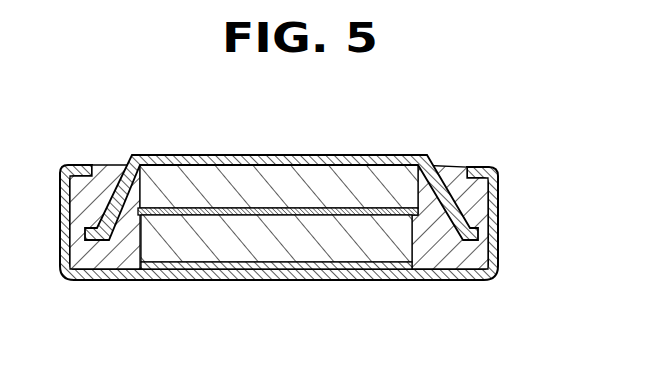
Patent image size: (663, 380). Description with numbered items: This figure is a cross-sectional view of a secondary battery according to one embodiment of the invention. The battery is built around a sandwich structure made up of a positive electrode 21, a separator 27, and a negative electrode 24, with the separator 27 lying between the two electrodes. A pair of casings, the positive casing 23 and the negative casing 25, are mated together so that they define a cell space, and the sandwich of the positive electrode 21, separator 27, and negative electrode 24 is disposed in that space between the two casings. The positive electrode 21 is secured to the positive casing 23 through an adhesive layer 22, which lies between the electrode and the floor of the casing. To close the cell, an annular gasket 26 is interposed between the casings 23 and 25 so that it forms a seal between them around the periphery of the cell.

The positive electrode 21 is at (188, 243).
The adhesive layer 22 is at (240, 266).
The positive casing 23 is at (305, 273).
The negative electrode 24 is at (262, 170).
The negative casing 25 is at (190, 163).
The annular gasket 26 is at (472, 211).
The separator 27 is at (381, 214).